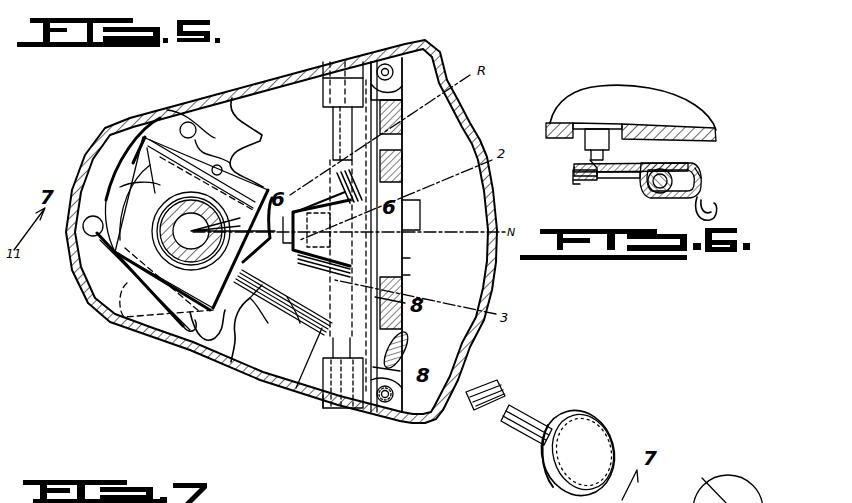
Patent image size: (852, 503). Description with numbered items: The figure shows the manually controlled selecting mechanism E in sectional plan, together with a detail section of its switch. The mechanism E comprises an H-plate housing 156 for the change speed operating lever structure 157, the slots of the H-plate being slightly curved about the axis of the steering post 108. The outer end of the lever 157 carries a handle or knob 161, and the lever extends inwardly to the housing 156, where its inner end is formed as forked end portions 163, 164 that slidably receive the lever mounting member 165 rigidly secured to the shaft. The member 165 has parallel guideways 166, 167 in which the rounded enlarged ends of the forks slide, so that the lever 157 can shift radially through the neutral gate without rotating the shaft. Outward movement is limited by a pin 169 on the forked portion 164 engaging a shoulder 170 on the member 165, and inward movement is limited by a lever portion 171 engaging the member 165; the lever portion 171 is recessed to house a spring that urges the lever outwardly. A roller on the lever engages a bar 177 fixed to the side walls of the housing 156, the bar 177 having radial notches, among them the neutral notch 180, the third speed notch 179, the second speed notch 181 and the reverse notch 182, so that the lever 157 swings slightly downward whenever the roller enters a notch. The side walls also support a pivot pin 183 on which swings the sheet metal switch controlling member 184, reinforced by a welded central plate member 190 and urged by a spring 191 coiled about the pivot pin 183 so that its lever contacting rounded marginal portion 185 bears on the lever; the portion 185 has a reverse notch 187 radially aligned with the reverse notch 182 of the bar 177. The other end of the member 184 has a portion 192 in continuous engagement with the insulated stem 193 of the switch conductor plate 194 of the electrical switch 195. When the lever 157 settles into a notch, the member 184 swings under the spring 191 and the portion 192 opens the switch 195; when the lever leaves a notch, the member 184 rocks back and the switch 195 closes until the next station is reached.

In FIG. 5, the H-plate housing 156 is at (303, 52).
In FIG. 5, the reverse notch 182 is at (398, 101).
In FIG. 5, the switch controlling member 184 is at (402, 129).
In FIG. 6, the switch controlling member 184 is at (713, 182).
In FIG. 5, the second speed notch 181 is at (402, 158).
In FIG. 5, the reverse notch of switch member 187 is at (367, 60).
In FIG. 5, the steering post 108 is at (186, 209).
In FIG. 5, the lever mounting member 165 is at (93, 187).
In FIG. 5, the forked end portion 163 is at (100, 258).
In FIG. 5, the guideway 167 is at (215, 175).
In FIG. 5, the pin 169 is at (235, 142).
In FIG. 5, the forked end portion 164 is at (165, 111).
In FIG. 5, the guideway 166 is at (170, 252).
In FIG. 5, the shoulder 170 is at (296, 213).
In FIG. 5, the spring 191 is at (331, 193).
In FIG. 6, the spring 191 is at (585, 182).
In FIG. 5, the plate member 190 is at (298, 265).
In FIG. 6, the plate member 190 is at (640, 182).
In FIG. 5, the lever portion 171 is at (268, 323).
In FIG. 5, the pivot pin 183 is at (287, 404).
In FIG. 6, the pivot pin 183 is at (680, 164).
In FIG. 5, the neutral notch 180 is at (406, 216).
In FIG. 5, the bar 177 is at (405, 258).
In FIG. 5, the third speed notch 179 is at (405, 277).
In FIG. 5, the manually controlled selecting mechanism E is at (148, 351).
In FIG. 5, the change speed operating lever structure 157 is at (489, 384).
In FIG. 5, the handle or knob 161 is at (590, 427).
In FIG. 6, the switch conductor plate 194 is at (581, 128).
In FIG. 6, the insulated stem 193 is at (628, 128).
In FIG. 6, the electrical switch 195 is at (609, 103).
In FIG. 6, the switch engaging portion 192 is at (586, 158).
In FIG. 6, the lever contacting rounded marginal portion 185 is at (717, 213).